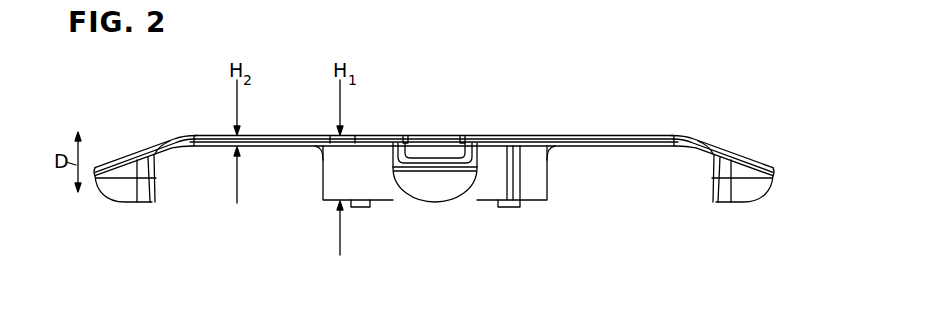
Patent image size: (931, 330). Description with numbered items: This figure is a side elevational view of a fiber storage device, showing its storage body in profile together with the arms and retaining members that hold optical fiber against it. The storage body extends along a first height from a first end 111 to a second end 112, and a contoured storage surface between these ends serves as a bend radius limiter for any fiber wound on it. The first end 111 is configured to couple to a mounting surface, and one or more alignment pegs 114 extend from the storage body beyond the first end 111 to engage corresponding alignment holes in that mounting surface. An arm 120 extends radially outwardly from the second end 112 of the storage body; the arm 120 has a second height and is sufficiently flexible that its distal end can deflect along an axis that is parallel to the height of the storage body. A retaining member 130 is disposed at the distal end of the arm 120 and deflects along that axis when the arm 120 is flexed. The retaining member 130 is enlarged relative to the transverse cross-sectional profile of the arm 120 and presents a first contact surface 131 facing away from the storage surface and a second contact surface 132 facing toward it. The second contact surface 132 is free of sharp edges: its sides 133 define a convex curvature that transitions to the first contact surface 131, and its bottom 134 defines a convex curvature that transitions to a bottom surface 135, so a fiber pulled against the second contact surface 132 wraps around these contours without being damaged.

The first end 111 is at (473, 211).
The second end 112 is at (472, 127).
The alignment peg 114 is at (360, 206).
The arm 120 is at (620, 135).
The retaining member 130 is at (755, 144).
The first contact surface 131 is at (98, 181).
The second contact surface 132 is at (157, 170).
The sides 133 is at (713, 165).
The bottom 134 is at (153, 201).
The bottom surface 135 is at (125, 203).